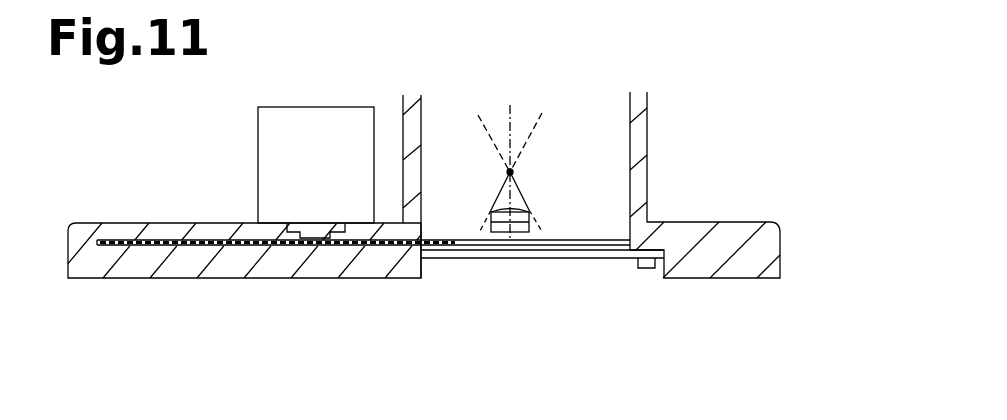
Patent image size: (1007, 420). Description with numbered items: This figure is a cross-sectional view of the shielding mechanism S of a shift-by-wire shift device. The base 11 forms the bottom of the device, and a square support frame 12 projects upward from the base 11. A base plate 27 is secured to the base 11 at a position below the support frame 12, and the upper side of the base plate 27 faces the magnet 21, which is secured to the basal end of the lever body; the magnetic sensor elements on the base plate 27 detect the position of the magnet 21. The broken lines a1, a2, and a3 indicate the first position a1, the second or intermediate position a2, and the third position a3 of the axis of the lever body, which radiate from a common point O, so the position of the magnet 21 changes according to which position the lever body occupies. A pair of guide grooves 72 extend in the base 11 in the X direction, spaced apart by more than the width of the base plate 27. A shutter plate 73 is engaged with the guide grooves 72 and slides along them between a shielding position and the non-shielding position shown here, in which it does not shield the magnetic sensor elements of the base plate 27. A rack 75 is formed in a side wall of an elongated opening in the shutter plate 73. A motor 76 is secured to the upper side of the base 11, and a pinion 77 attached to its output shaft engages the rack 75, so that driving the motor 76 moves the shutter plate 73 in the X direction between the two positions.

The base 11 is at (770, 243).
The support frame 12 is at (650, 128).
The magnet 21 is at (530, 224).
The base plate 27 is at (610, 262).
The guide grooves 72 is at (613, 241).
The shutter plate 73 is at (188, 247).
The rack 75 is at (238, 248).
The motor 76 is at (266, 127).
The pinion 77 is at (303, 247).
The reference point O is at (506, 172).
The first position a1 is at (485, 127).
The second position a2 is at (513, 127).
The third position a3 is at (540, 127).
The shielding mechanism S is at (396, 293).
The X direction X is at (315, 85).